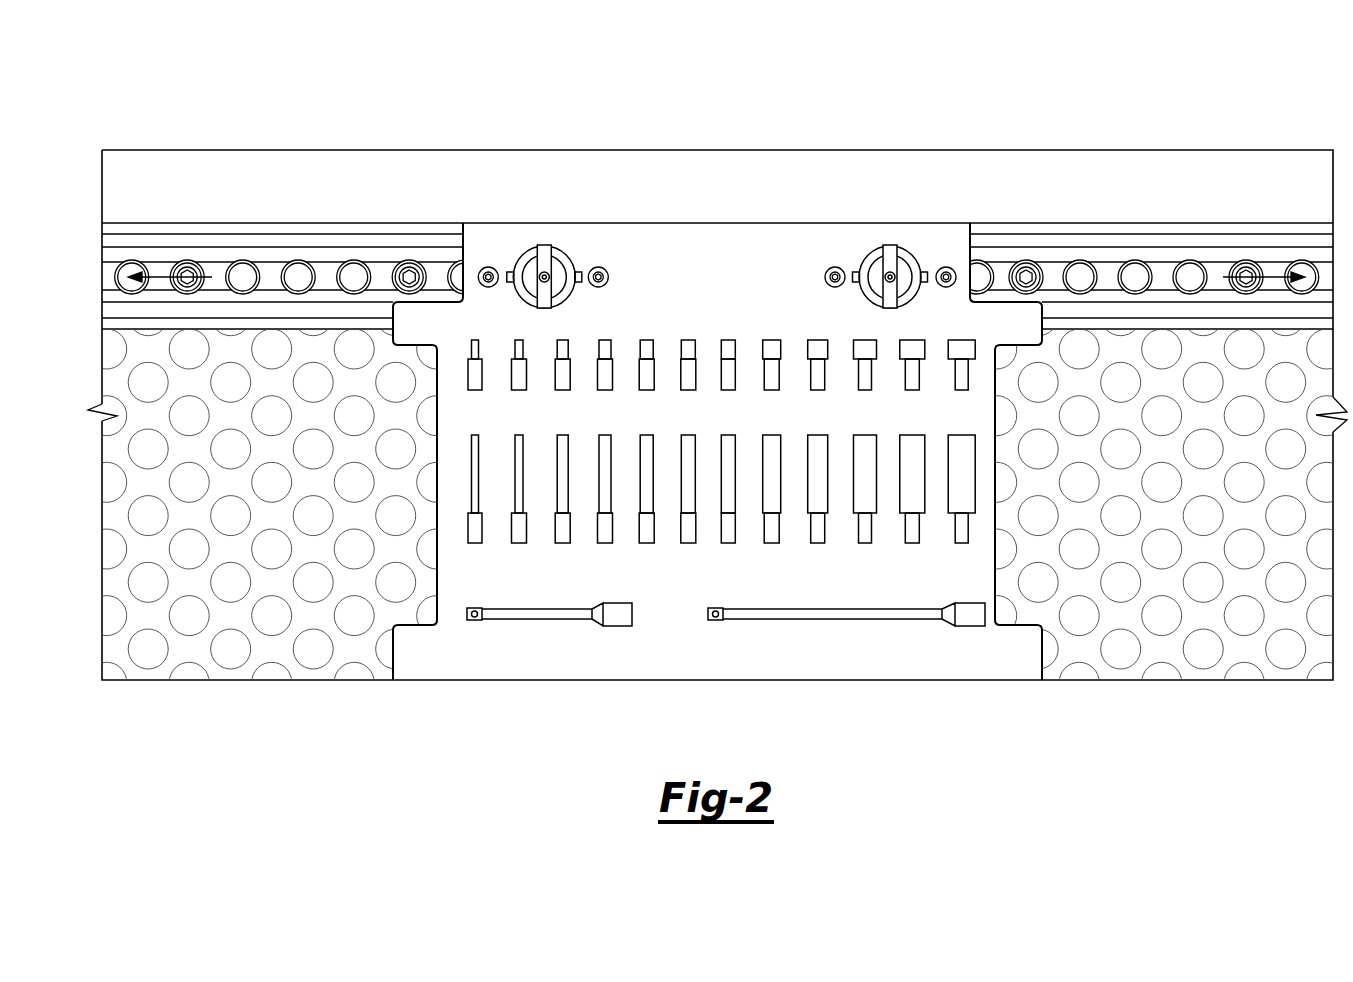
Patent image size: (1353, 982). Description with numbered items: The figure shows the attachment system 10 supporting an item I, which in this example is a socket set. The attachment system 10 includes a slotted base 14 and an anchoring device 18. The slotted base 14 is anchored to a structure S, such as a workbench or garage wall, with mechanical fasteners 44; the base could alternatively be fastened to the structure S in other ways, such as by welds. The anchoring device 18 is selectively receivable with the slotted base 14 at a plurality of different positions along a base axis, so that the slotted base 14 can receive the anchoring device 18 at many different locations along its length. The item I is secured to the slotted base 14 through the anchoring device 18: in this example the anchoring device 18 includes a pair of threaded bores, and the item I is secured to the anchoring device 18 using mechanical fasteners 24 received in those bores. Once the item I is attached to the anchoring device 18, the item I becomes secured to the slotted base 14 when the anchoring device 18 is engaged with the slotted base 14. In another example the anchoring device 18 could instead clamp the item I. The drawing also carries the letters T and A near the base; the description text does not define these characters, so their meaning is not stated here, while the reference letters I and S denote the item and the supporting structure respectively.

The attachment system 10 is at (1103, 90).
The slotted base 14 is at (1066, 228).
The anchoring device 18 is at (562, 250).
The mechanical fasteners 24 is at (490, 268).
The mechanical fasteners 44 is at (190, 262).
The structure S is at (190, 613).
The item I is at (1020, 322).
The tool T is at (1265, 283).
The adjustment direction A is at (716, 230).